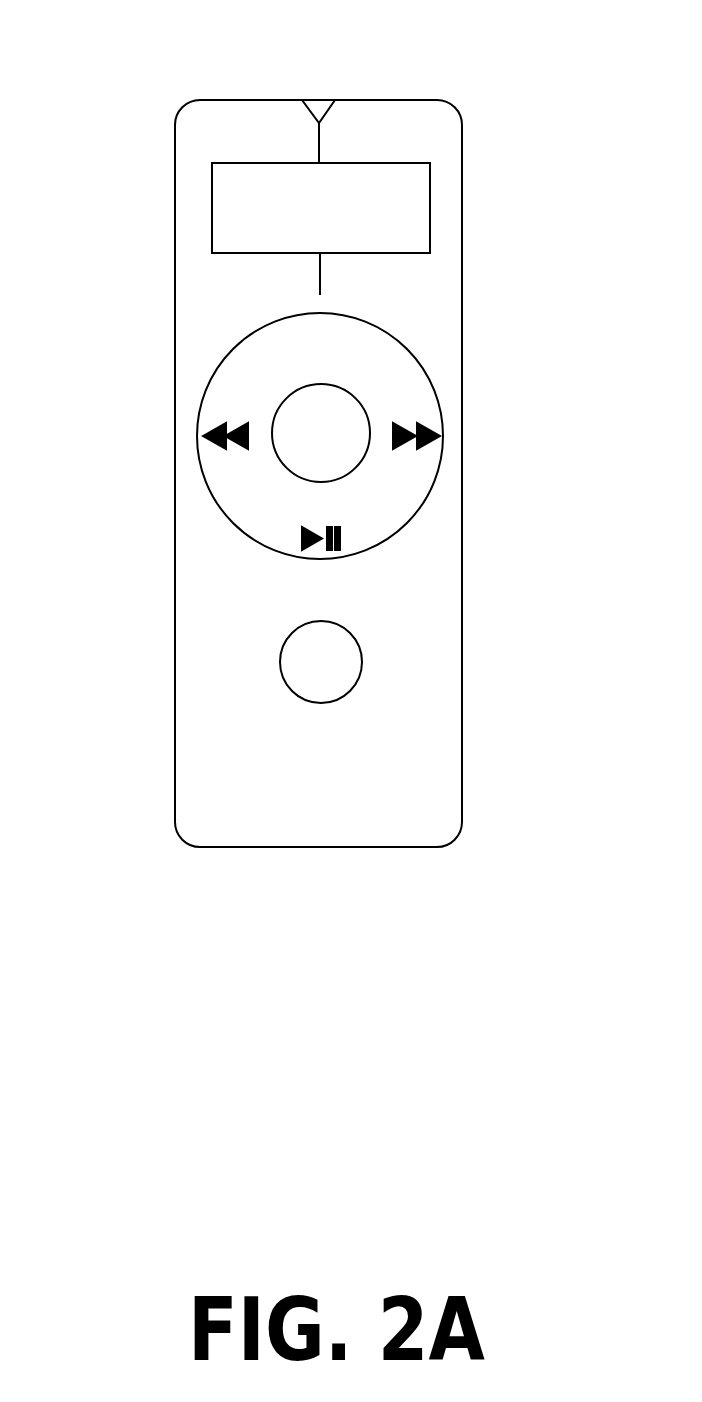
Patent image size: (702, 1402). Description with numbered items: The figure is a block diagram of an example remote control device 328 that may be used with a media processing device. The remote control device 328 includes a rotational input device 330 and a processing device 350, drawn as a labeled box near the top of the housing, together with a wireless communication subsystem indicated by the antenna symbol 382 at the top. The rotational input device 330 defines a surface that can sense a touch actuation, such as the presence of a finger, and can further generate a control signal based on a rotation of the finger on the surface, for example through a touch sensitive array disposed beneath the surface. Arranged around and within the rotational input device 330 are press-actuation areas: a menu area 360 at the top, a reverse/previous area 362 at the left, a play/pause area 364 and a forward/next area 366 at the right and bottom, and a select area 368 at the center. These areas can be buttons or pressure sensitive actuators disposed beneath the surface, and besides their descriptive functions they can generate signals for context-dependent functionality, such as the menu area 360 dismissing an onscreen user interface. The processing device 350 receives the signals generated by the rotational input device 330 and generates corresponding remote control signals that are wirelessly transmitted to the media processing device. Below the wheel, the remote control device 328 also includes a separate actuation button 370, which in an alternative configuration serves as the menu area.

The remote control device 328 is at (176, 197).
The processing device 350 is at (432, 178).
The antenna 382 is at (319, 98).
The rotational input device 330 is at (430, 370).
The menu area 360 is at (377, 323).
The reverse/previous area 362 is at (212, 408).
The play/pause area 364 is at (438, 457).
The forward/next area 366 is at (350, 533).
The select area 368 is at (318, 433).
The separate actuation button 370 is at (360, 663).